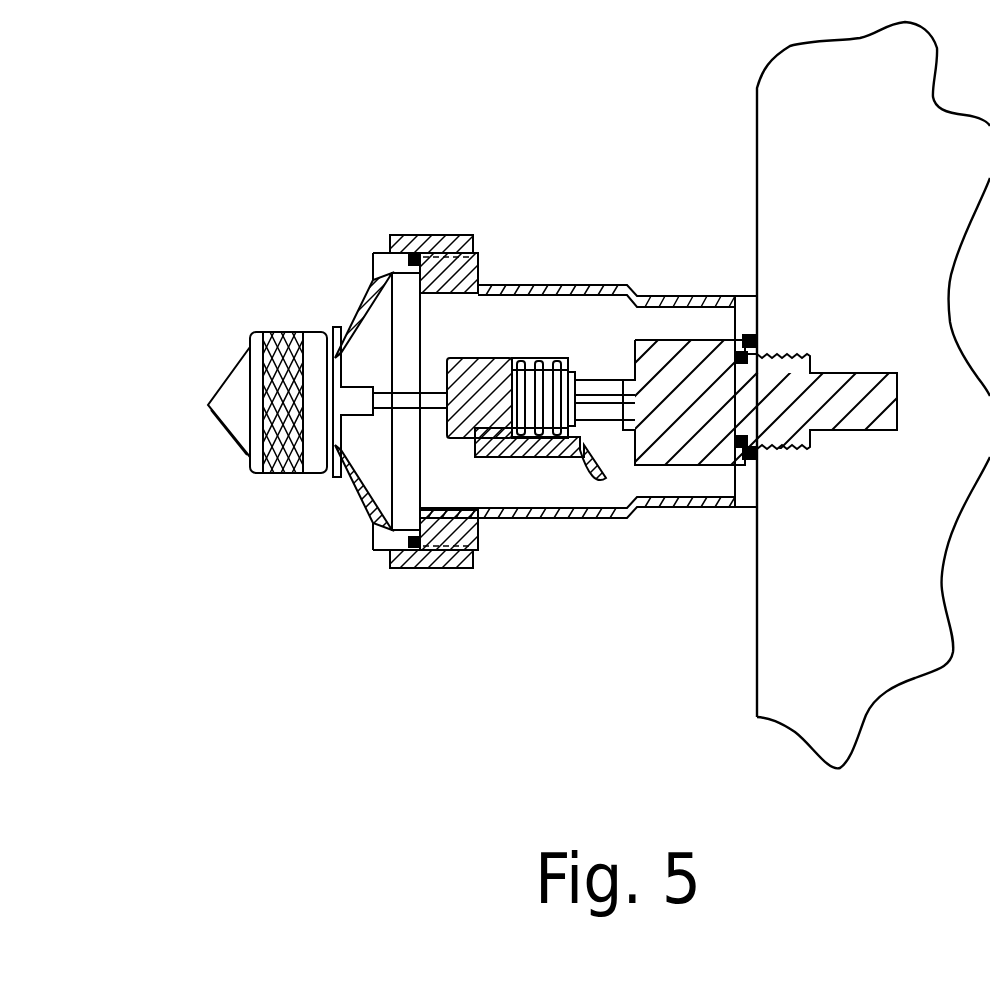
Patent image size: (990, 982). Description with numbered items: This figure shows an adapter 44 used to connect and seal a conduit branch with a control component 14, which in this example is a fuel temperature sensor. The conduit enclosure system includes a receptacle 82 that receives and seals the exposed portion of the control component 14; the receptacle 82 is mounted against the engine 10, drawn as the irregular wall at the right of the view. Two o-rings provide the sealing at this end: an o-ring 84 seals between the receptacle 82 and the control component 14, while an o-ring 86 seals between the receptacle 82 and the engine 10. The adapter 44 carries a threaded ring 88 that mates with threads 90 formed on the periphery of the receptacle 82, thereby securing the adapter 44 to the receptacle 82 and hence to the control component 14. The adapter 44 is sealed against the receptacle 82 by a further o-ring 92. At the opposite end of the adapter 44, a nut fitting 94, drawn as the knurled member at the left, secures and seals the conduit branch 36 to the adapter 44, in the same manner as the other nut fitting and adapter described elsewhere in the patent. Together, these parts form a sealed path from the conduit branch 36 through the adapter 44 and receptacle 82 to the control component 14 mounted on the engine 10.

The engine 10 is at (757, 118).
The control component 14 is at (588, 350).
The conduit branch 36 is at (228, 438).
The adapter 44 is at (330, 583).
The receptacle 82 is at (558, 518).
The o-ring 84 is at (738, 358).
The o-ring 86 is at (750, 335).
The threaded ring 88 is at (445, 235).
The threads 90 is at (482, 255).
The o-ring 92 is at (374, 548).
The nut fitting 94 is at (285, 328).